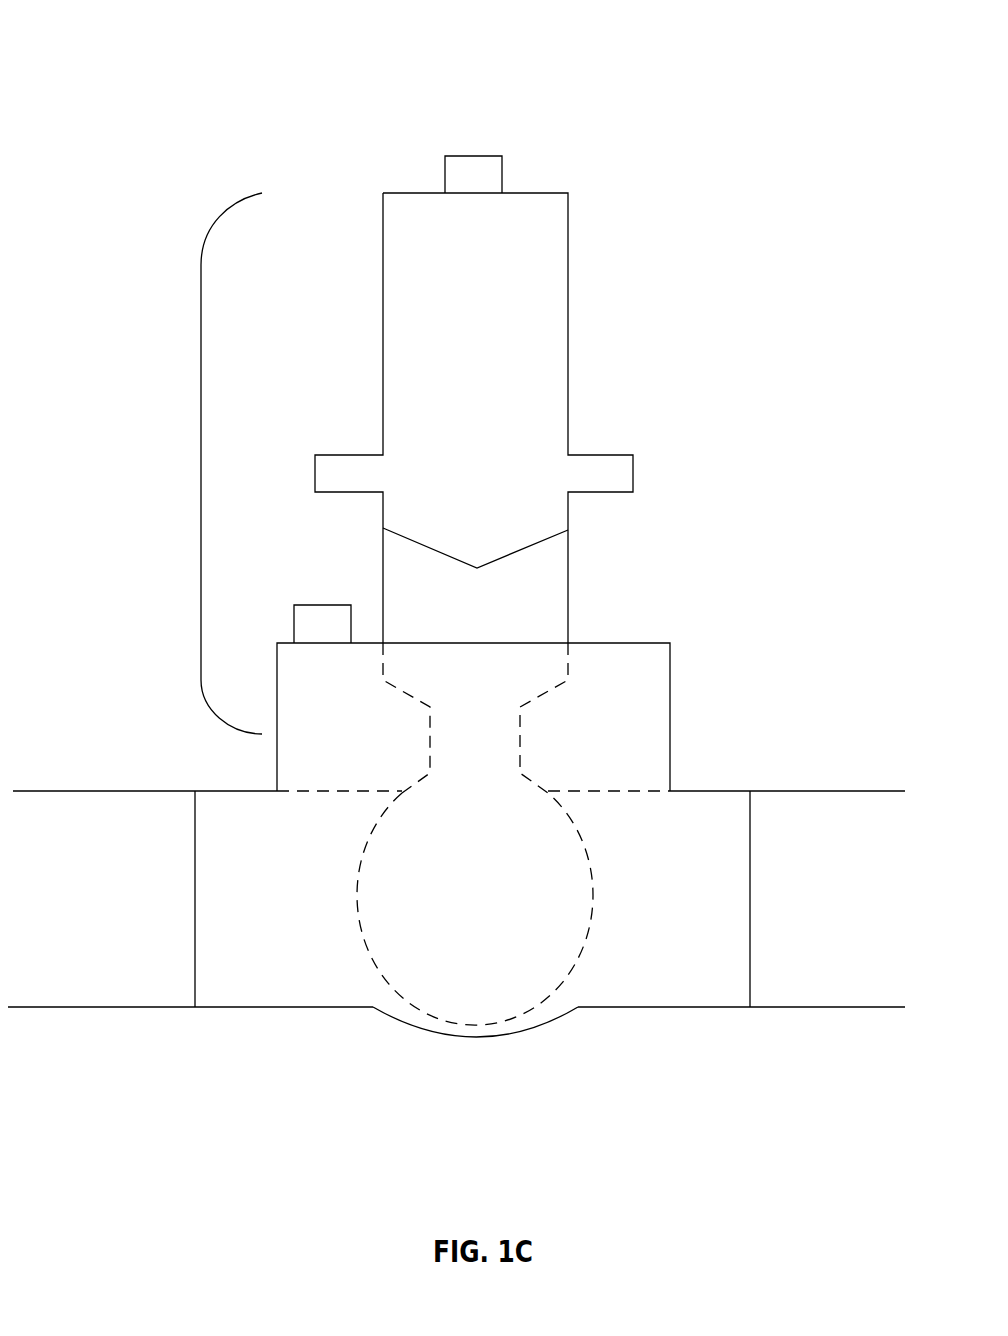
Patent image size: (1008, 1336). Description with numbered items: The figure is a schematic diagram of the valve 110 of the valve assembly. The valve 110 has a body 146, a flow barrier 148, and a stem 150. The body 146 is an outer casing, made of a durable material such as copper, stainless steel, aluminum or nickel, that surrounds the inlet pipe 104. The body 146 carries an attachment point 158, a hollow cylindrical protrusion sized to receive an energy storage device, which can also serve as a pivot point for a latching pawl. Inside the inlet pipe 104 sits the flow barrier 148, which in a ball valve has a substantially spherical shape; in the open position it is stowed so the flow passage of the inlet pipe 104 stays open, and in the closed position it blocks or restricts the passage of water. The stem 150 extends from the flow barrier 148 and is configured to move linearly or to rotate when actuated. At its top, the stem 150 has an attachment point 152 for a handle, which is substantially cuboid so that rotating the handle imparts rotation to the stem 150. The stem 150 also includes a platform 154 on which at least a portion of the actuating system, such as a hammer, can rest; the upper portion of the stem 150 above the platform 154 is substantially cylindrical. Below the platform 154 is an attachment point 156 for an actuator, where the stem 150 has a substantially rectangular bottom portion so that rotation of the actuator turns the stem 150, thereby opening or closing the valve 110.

The valve 110 is at (312, 97).
The inlet pipe 104 is at (97, 791).
The body 146 is at (750, 873).
The flow barrier 148 is at (583, 952).
The stem 150 is at (395, 492).
The attachment point 152 is at (503, 169).
The platform 154 is at (627, 492).
The attachment point 156 is at (513, 557).
The attachment point 158 is at (322, 605).